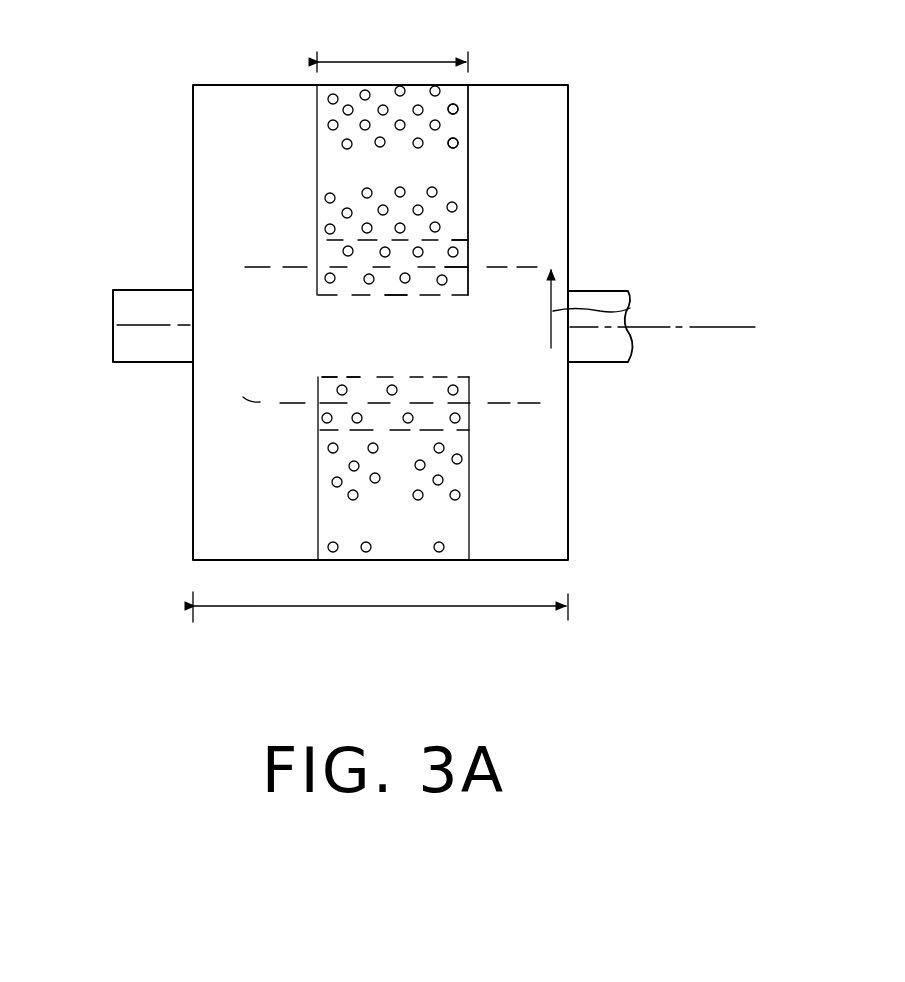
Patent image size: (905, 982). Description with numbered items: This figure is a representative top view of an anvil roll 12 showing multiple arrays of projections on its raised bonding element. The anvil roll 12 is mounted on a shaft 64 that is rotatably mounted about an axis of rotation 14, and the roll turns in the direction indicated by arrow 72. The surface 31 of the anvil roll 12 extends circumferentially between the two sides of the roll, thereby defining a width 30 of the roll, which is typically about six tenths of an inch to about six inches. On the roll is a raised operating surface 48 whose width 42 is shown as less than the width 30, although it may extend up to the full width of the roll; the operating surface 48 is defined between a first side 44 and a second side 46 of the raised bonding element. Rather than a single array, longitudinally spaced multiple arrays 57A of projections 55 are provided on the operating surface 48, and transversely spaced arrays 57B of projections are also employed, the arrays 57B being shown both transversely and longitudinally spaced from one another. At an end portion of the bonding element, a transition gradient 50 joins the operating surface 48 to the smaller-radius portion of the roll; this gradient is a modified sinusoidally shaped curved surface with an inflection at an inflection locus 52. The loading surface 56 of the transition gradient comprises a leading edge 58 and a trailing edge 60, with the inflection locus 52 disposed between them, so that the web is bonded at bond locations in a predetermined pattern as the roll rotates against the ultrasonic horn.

The anvil roll 12 is at (190, 483).
The axis of rotation 14 is at (727, 327).
The width of anvil roll 30 is at (468, 606).
The surface of anvil roll 31 is at (542, 154).
The width of raised operating surface 42 is at (388, 60).
The first side of raised bonding element 44 is at (318, 466).
The second side of raised bonding element 46 is at (469, 520).
The raised operating surface 48 is at (314, 121).
The transition gradient 50 is at (470, 255).
The inflection locus 52 is at (296, 265).
The projections 55 is at (459, 141).
The loading surface 56 is at (382, 274).
The longitudinally spaced multiple arrays of projections 57A is at (363, 192).
The transversely spaced arrays of projections 57B is at (418, 500).
The leading edge 58 is at (418, 375).
The trailing edge 60 is at (406, 430).
The shaft 64 is at (607, 291).
The arrow indicating direction of rotation 72 is at (630, 308).